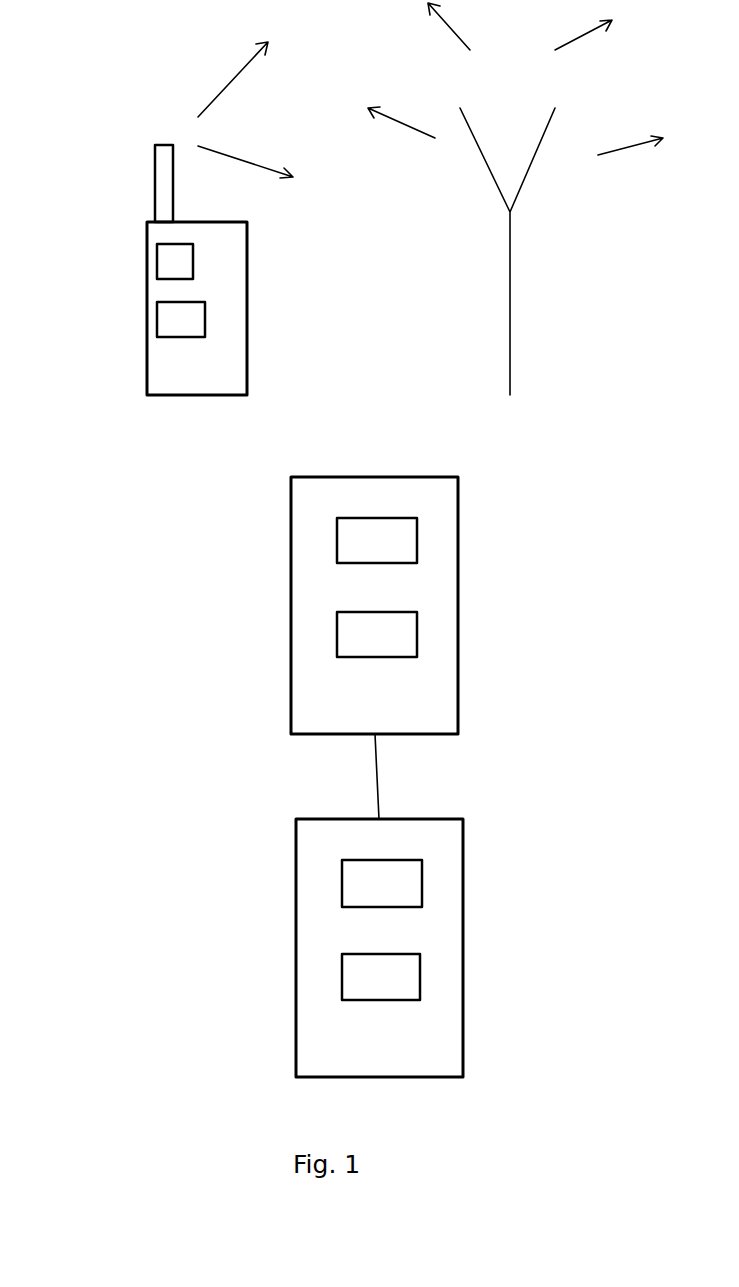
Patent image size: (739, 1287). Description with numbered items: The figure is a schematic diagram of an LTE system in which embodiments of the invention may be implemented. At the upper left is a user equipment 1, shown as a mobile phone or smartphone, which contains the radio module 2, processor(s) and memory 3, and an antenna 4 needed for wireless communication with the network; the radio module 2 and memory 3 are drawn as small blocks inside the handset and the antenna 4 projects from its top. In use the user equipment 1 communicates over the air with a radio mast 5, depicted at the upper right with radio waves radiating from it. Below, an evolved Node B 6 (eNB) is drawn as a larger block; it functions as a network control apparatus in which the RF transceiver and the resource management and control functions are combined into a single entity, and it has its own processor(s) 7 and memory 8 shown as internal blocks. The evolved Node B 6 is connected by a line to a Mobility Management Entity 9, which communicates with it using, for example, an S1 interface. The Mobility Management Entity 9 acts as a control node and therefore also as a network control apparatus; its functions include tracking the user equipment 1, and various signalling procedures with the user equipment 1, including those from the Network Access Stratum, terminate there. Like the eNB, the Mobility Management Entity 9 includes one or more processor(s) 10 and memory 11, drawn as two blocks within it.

The user equipment 1 is at (147, 270).
The radio module 2 is at (193, 255).
The memory 3 is at (157, 322).
The antenna 4 is at (157, 170).
The radio mast 5 is at (511, 257).
The evolved Node B 6 is at (458, 660).
The processor 7 is at (337, 557).
The memory 8 is at (337, 635).
The Mobility Management Entity 9 is at (463, 1000).
The processor 10 is at (342, 900).
The memory 11 is at (342, 982).